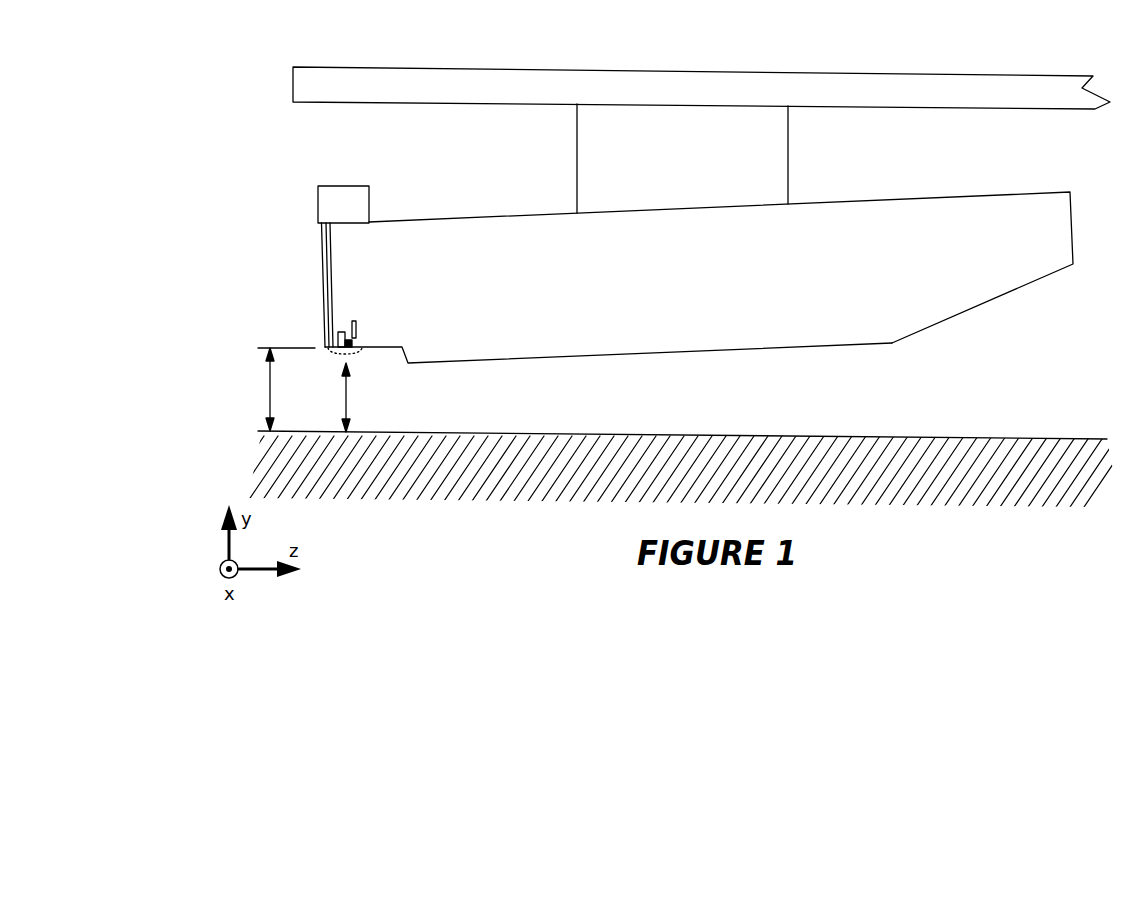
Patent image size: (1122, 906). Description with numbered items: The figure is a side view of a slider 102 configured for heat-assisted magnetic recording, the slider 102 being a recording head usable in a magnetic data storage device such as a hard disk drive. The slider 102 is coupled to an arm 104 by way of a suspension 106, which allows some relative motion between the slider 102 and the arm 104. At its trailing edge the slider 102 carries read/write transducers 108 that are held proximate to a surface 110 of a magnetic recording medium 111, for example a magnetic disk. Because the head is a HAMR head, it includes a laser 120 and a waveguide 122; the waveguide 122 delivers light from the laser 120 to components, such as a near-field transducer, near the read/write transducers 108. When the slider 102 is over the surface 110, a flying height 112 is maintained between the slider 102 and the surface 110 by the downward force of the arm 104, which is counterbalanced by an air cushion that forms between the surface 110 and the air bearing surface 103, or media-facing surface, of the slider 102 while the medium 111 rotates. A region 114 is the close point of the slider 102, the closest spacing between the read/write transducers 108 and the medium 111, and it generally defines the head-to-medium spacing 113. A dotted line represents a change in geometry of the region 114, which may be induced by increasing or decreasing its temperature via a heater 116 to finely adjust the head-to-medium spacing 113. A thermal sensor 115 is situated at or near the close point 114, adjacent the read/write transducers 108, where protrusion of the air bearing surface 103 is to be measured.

The slider 102 is at (945, 205).
The air bearing surface 103 is at (523, 360).
The arm 104 is at (1008, 82).
The suspension 106 is at (788, 150).
The read/write transducers 108 is at (340, 332).
The surface 110 is at (947, 437).
The magnetic recording medium 111 is at (965, 490).
The flying height 112 is at (268, 389).
The head-to-medium spacing 113 is at (325, 397).
The region (close point) 114 is at (353, 358).
The thermal sensor 115 is at (352, 343).
The heater 116 is at (355, 323).
The laser 120 is at (345, 198).
The waveguide 122 is at (327, 258).